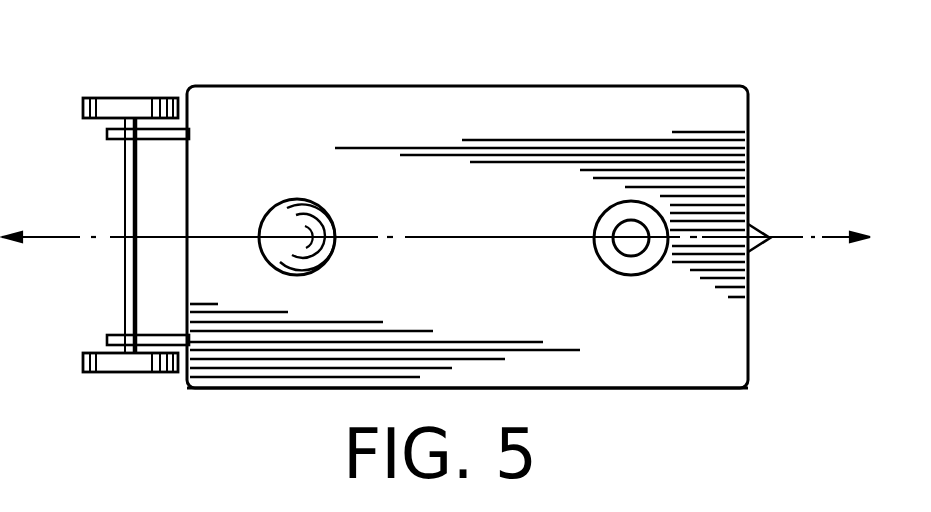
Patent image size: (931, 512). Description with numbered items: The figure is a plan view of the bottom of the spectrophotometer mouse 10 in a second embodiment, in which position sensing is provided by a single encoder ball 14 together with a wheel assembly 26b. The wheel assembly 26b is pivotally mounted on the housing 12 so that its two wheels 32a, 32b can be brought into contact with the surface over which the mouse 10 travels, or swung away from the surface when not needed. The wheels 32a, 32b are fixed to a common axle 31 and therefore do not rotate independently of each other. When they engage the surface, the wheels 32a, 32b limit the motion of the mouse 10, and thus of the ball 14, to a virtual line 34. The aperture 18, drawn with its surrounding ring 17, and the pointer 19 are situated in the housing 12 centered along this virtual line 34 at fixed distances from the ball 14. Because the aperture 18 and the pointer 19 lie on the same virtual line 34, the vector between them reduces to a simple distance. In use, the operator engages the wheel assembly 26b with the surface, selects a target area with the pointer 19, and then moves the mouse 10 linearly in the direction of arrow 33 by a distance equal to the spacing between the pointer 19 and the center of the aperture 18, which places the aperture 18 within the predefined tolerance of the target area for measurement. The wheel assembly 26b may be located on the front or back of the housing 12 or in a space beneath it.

The mouse 10 is at (558, 72).
The housing 12 is at (377, 86).
The encoder ball 14 is at (322, 205).
The illumination port ring 17 is at (612, 268).
The aperture 18 is at (612, 222).
The pointer 19 is at (754, 226).
The wheel assembly 26b is at (123, 185).
The axle 31 is at (123, 269).
The wheel 32a is at (82, 108).
The wheel 32b is at (83, 365).
The arrow 33 is at (838, 236).
The virtual line 34 is at (787, 240).